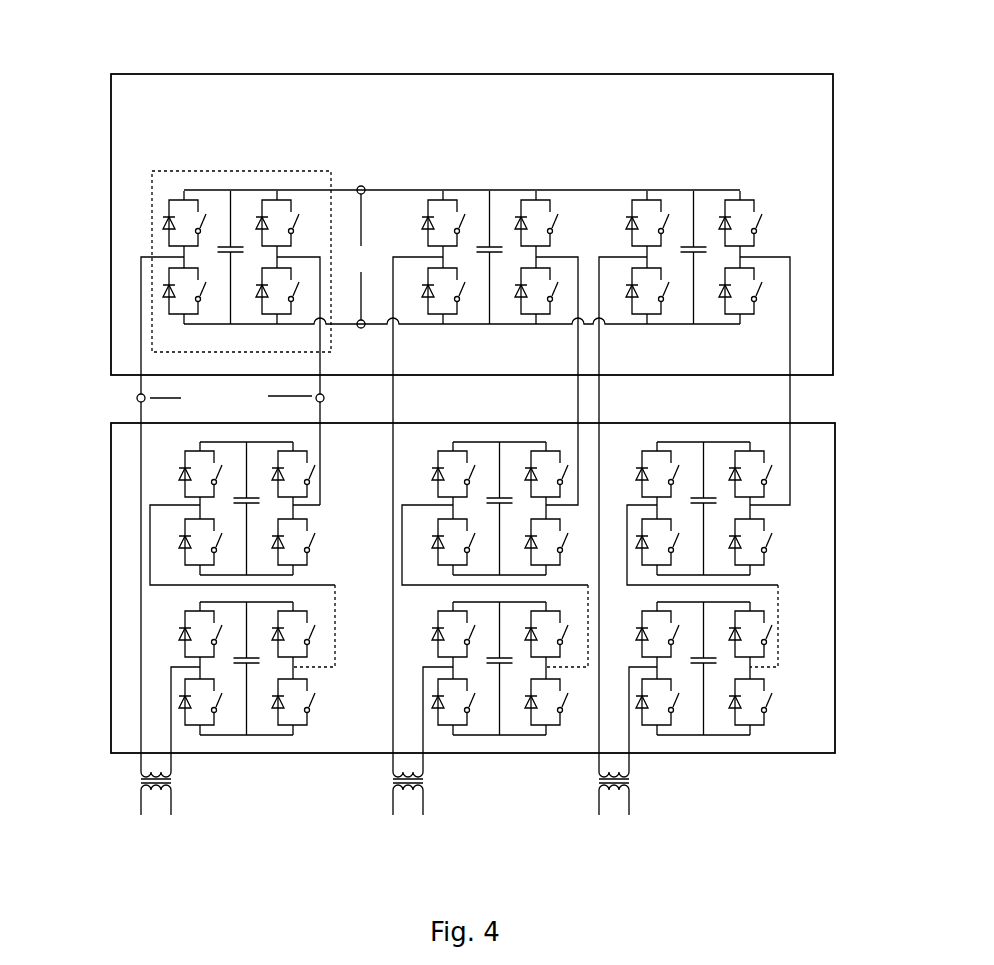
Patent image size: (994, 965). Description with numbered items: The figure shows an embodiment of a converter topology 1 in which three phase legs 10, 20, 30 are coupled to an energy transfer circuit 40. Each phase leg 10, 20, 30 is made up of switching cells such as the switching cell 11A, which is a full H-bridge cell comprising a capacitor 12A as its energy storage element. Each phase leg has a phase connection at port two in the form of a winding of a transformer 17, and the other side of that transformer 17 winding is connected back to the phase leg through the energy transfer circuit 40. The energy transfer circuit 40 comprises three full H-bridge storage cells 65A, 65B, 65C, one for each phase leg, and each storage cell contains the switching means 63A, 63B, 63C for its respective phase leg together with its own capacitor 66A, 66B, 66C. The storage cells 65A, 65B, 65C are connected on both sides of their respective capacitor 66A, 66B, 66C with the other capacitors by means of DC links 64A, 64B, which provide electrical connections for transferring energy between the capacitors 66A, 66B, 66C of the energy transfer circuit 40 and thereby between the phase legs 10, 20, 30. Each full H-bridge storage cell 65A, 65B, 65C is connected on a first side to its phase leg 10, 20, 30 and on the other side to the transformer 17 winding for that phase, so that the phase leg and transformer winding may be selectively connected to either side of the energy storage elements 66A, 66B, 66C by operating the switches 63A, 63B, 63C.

The power electronic converter system 1 is at (78, 132).
The energy transfer circuit 40 is at (605, 74).
The switching means 63A is at (297, 147).
The capacitor 66A is at (234, 247).
The DC link 64A is at (371, 322).
The full H-bridge storage cell 65A is at (130, 302).
The switching means 63B is at (530, 147).
The capacitor 66B is at (492, 247).
The DC link 64B is at (603, 323).
The full H-bridge storage cell 65B is at (495, 330).
The switching means 63C is at (730, 153).
The capacitor 66C is at (703, 240).
The full H-bridge storage cell 65C is at (698, 328).
The switching cell 11A is at (160, 472).
The capacitor 12A is at (252, 495).
The transformer 17 is at (143, 780).
The phase leg 10 is at (249, 806).
The phase leg 20 is at (505, 806).
The phase leg 30 is at (706, 806).